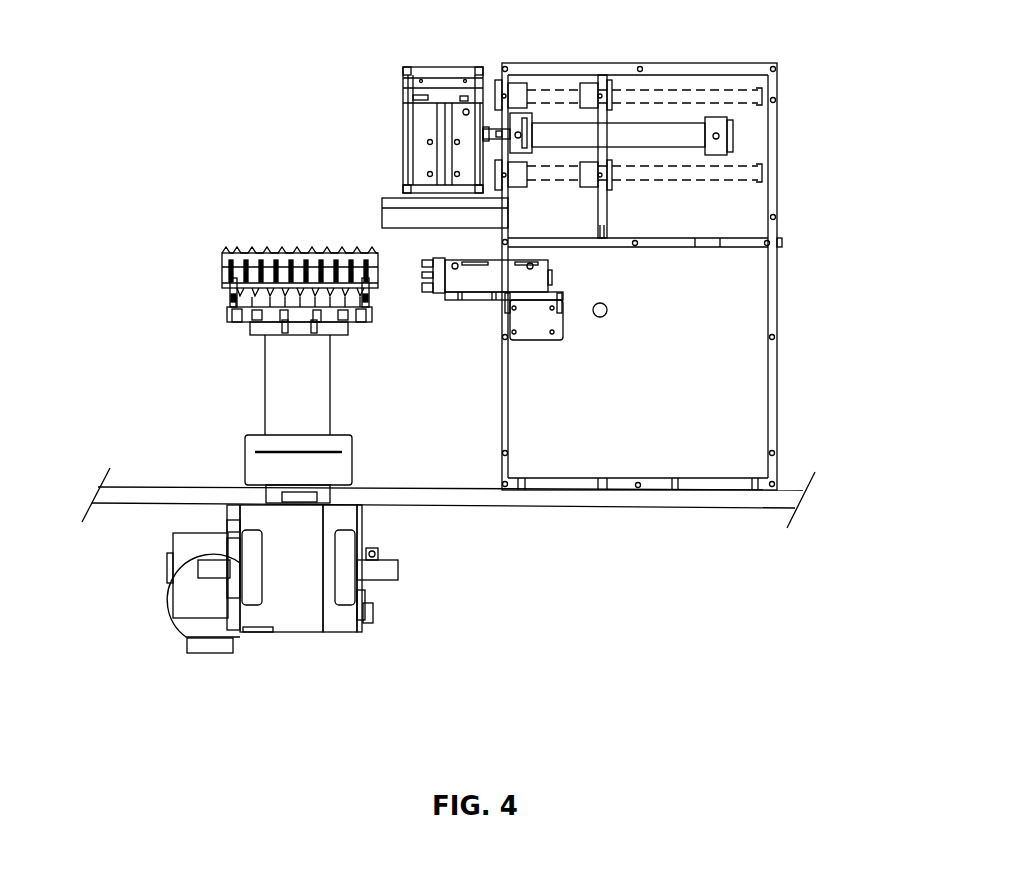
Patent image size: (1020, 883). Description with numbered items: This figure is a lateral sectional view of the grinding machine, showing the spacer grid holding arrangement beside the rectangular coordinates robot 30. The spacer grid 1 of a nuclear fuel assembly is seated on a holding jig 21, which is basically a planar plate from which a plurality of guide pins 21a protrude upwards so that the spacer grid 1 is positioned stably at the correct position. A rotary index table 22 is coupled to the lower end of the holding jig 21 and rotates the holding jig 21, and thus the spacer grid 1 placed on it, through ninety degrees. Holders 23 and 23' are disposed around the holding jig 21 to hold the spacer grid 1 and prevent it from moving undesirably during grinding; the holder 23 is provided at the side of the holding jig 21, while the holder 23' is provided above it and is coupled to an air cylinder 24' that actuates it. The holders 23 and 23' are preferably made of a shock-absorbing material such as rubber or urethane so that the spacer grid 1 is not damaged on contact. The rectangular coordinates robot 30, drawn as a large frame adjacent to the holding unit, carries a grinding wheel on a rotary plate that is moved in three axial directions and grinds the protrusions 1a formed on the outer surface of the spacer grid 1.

The spacer grid 1 is at (222, 265).
The protrusions 1a is at (238, 258).
The holding jig 21 is at (228, 312).
The guide pins 21a is at (230, 300).
The rotary index table 22 is at (255, 330).
The holder 23 is at (282, 617).
The holder 23' is at (395, 194).
The air cylinder 24' is at (403, 130).
The rectangular coordinates robot 30 is at (780, 297).